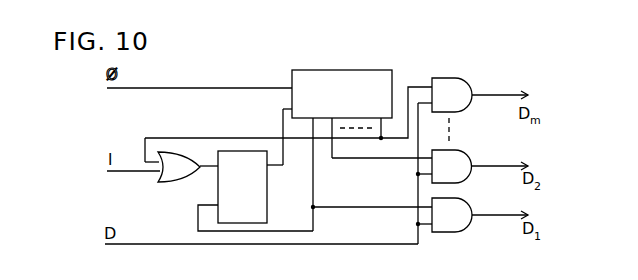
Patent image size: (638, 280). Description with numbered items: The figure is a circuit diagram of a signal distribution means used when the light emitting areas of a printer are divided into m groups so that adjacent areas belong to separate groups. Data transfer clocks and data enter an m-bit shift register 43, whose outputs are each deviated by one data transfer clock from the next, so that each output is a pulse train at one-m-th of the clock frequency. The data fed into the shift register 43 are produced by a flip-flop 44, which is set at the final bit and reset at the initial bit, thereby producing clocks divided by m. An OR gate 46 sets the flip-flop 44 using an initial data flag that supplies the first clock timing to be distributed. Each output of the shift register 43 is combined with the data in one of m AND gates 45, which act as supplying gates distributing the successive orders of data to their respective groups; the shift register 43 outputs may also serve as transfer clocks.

The m-bit shift register 43 is at (364, 70).
The flip-flop 44 is at (267, 193).
The AND gate 45 is at (467, 110).
The OR gate 46 is at (170, 183).